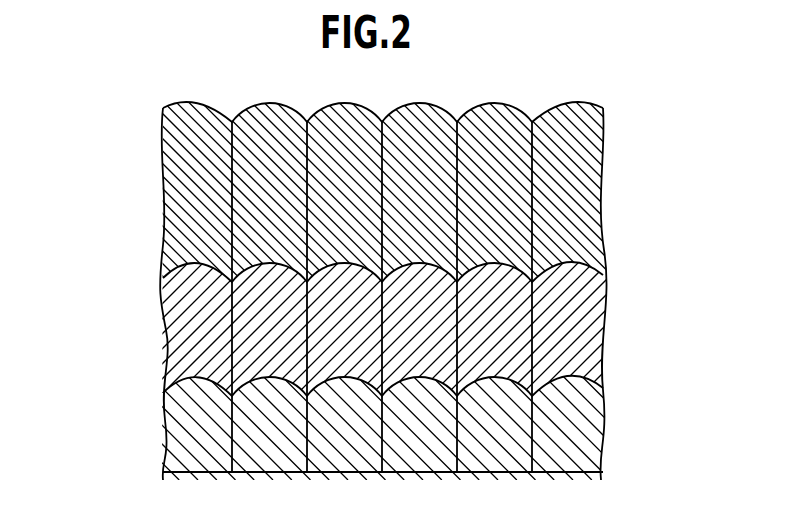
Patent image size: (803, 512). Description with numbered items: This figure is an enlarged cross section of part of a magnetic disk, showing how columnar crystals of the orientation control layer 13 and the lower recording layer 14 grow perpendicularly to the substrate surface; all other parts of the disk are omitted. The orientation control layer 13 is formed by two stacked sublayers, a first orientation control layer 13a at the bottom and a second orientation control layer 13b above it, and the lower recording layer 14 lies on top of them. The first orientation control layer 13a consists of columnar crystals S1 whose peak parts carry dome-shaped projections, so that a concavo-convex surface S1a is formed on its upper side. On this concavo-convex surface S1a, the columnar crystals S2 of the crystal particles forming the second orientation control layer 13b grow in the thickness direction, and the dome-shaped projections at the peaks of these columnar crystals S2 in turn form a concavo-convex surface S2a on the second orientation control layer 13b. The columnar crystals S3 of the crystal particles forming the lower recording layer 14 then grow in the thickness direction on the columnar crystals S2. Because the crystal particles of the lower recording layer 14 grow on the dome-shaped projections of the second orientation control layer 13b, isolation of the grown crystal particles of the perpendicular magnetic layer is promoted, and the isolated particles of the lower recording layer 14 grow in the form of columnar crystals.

The lower recording layer 14 is at (401, 190).
The orientation control layer 13 is at (378, 357).
The first orientation control layer 13a is at (387, 413).
The second orientation control layer 13b is at (378, 317).
The columnar crystals S1 is at (252, 427).
The concavo-convex surface S1a is at (270, 375).
The columnar crystals S2 is at (252, 322).
The concavo-convex surface S2a is at (270, 262).
The columnar crystals S3 is at (247, 180).